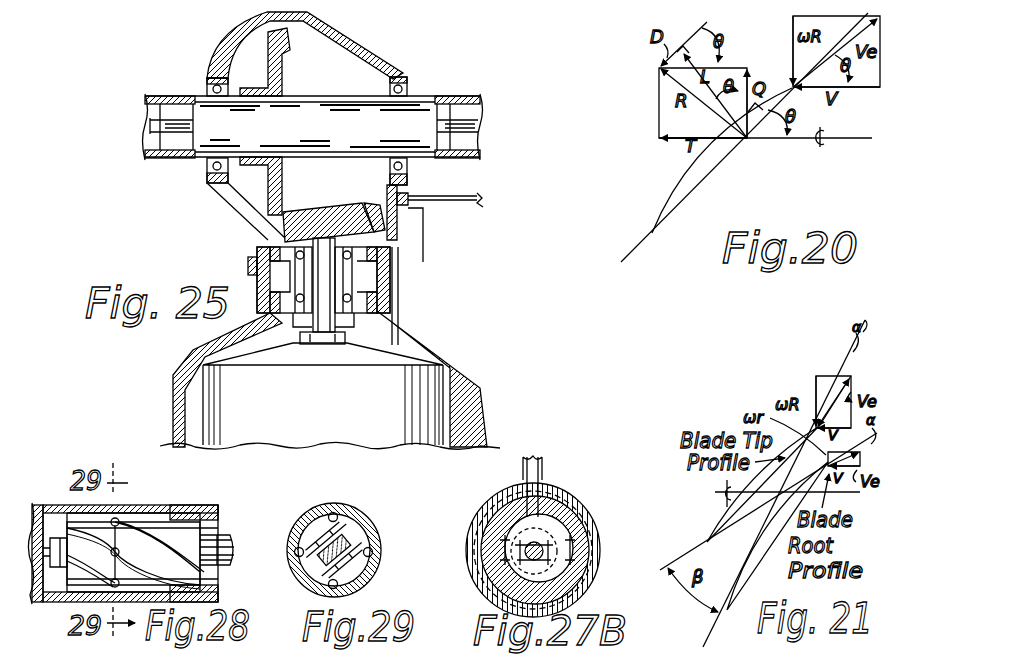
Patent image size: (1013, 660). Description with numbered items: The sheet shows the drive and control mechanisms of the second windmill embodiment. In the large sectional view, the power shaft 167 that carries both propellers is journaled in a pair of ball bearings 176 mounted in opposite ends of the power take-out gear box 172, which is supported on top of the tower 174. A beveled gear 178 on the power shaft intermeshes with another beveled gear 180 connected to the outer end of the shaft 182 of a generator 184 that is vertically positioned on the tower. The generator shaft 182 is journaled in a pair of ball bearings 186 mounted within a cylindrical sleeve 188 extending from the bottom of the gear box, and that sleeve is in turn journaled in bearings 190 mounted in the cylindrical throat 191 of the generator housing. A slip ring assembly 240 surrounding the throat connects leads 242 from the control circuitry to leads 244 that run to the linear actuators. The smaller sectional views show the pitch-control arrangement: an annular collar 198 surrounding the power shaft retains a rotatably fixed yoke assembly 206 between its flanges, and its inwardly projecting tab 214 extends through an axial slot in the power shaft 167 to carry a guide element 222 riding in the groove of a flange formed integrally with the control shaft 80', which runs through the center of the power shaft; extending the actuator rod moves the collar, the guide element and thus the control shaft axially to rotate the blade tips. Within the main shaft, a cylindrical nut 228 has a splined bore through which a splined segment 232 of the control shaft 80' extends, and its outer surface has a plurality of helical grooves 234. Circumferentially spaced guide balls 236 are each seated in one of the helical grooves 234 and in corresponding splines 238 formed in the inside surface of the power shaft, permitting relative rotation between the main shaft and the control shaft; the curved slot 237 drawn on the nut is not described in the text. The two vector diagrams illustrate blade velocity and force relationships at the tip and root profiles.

In FIG. 25, the power take-out gear box 172 is at (350, 34).
In FIG. 25, the ball bearings 176 is at (207, 79).
In FIG. 25, the beveled gear 178 is at (283, 71).
In FIG. 25, the power shaft 167 is at (443, 94).
In FIG. 28, the power shaft 167 is at (207, 510).
In FIG. 29, the power shaft 167 is at (345, 512).
In FIG. 25, the beveled gear 180 is at (318, 212).
In FIG. 25, the leads 244 is at (483, 198).
In FIG. 25, the ball bearings 186 is at (393, 244).
In FIG. 25, the slip ring assembly 240 is at (405, 261).
In FIG. 25, the cylindrical sleeve 188 is at (405, 274).
In FIG. 25, the leads 242 is at (405, 310).
In FIG. 25, the generator housing throat 191 is at (268, 300).
In FIG. 25, the bearings 190 is at (258, 296).
In FIG. 25, the generator shaft 182 is at (305, 333).
In FIG. 25, the generator 184 is at (345, 412).
In FIG. 25, the tower 174 is at (478, 386).
In FIG. 28, the splines 238 is at (53, 530).
In FIG. 29, the splines 238 is at (370, 552).
In FIG. 28, the guide balls 236 is at (118, 548).
In FIG. 28, the cylindrical nut 228 is at (180, 520).
In FIG. 29, the cylindrical nut 228 is at (377, 568).
In FIG. 28, the helical grooves 234 is at (200, 533).
In FIG. 28, the splined segment 232 is at (297, 553).
In FIG. 28, the helical slot 237 is at (95, 570).
In FIG. 27B, the tab 214 is at (523, 510).
In FIG. 27B, the annular collar 198 is at (560, 487).
In FIG. 27B, the yoke assembly 206 is at (572, 517).
In FIG. 27B, the guide element 222 is at (563, 572).
In FIG. 27B, the control shaft 80' is at (576, 572).